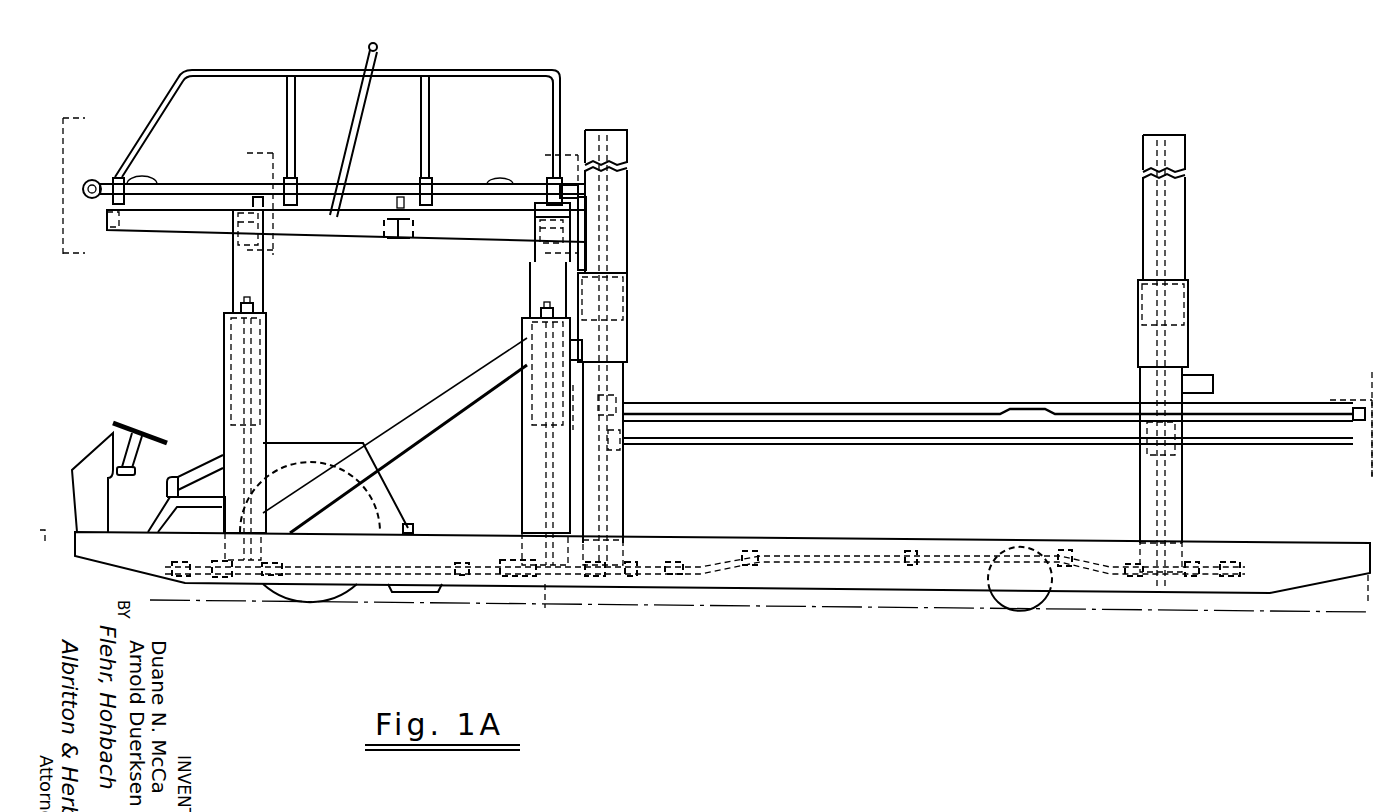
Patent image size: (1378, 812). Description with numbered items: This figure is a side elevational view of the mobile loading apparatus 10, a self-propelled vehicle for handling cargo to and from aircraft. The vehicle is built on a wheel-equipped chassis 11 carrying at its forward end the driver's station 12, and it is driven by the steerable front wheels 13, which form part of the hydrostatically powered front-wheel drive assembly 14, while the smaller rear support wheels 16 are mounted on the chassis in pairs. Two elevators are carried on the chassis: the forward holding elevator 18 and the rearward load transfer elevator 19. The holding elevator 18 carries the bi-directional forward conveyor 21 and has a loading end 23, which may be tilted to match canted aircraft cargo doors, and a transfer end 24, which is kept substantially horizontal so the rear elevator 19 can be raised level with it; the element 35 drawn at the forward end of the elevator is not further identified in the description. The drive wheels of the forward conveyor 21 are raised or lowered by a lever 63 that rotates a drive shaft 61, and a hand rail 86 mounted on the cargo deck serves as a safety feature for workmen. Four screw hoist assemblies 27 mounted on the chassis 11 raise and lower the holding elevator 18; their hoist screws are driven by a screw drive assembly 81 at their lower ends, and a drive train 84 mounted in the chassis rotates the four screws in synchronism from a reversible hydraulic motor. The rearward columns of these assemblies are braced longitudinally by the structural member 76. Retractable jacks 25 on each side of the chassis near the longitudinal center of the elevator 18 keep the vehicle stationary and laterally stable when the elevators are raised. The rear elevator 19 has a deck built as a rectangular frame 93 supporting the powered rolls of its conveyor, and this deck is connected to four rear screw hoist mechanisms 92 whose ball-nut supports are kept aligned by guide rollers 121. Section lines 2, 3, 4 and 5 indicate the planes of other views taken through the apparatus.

The section line 2- 2 is at (705, 590).
The section line 3- 3 is at (94, 187).
The section line 4- 4 is at (238, 203).
The section line 5- 5 is at (539, 206).
The mobile loading apparatus 10 is at (890, 674).
The chassis 11 is at (745, 593).
The driver's station 12 is at (193, 410).
The steerable front wheels 13 is at (266, 600).
The front-wheel drive assembly 14 is at (1372, 372).
The rear support wheels 16 is at (1028, 605).
The holding elevator 18 is at (355, 210).
The load transfer elevator 19 is at (868, 398).
The forward conveyor 21 is at (255, 250).
The loading end 23 is at (100, 220).
The transfer end 24 is at (580, 211).
The retractable jacks 25 is at (405, 592).
The screw hoist assemblies 27 is at (275, 334).
The rail 35 is at (88, 184).
The drive shaft 61 is at (333, 232).
The lever 63 is at (384, 51).
The structural member 76 is at (437, 405).
The screw drive assembly 81 is at (547, 605).
The drive train 84 is at (325, 595).
The hand rail 86 is at (262, 70).
The rear screw hoist mechanisms 92 is at (267, 427).
The rectangular frame 93 is at (266, 286).
The guide rollers 121 is at (873, 545).